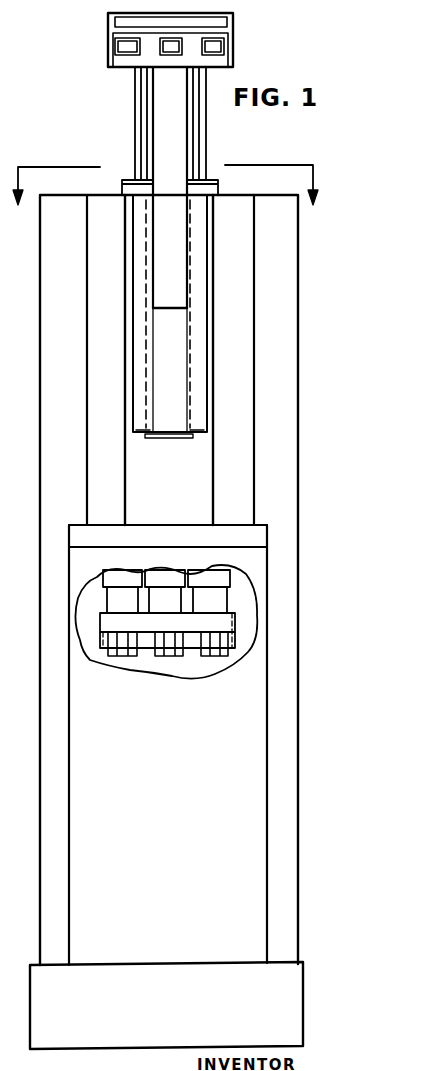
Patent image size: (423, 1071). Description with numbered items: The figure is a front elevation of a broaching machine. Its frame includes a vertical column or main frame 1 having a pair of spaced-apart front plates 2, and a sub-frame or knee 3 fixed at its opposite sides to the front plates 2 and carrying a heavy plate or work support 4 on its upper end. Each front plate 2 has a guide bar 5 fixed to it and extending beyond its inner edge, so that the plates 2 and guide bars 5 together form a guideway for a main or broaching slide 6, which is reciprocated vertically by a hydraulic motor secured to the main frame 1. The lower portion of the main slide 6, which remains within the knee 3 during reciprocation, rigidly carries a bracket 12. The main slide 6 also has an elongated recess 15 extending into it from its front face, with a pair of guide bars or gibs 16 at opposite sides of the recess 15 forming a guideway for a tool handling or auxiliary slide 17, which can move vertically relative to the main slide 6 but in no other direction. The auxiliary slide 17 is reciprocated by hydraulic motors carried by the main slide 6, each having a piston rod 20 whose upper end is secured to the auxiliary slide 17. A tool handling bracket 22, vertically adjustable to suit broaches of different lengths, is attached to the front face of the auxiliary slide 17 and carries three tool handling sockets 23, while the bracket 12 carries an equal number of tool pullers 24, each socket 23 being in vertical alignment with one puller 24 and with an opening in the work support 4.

The main frame 1 is at (50, 484).
The front plates 2 is at (288, 442).
The knee 3 is at (270, 692).
The work support 4 is at (93, 547).
The guide bar 5 is at (98, 344).
The main slide 6 is at (157, 510).
The bracket 12 is at (112, 625).
The elongated recess 15 is at (178, 434).
The gibs 16 is at (139, 436).
The auxiliary slide 17 is at (184, 132).
The piston rod 20 is at (136, 128).
The tool handling bracket 22 is at (108, 33).
The tool handling sockets 23 is at (128, 45).
The tool pullers 24 is at (165, 578).